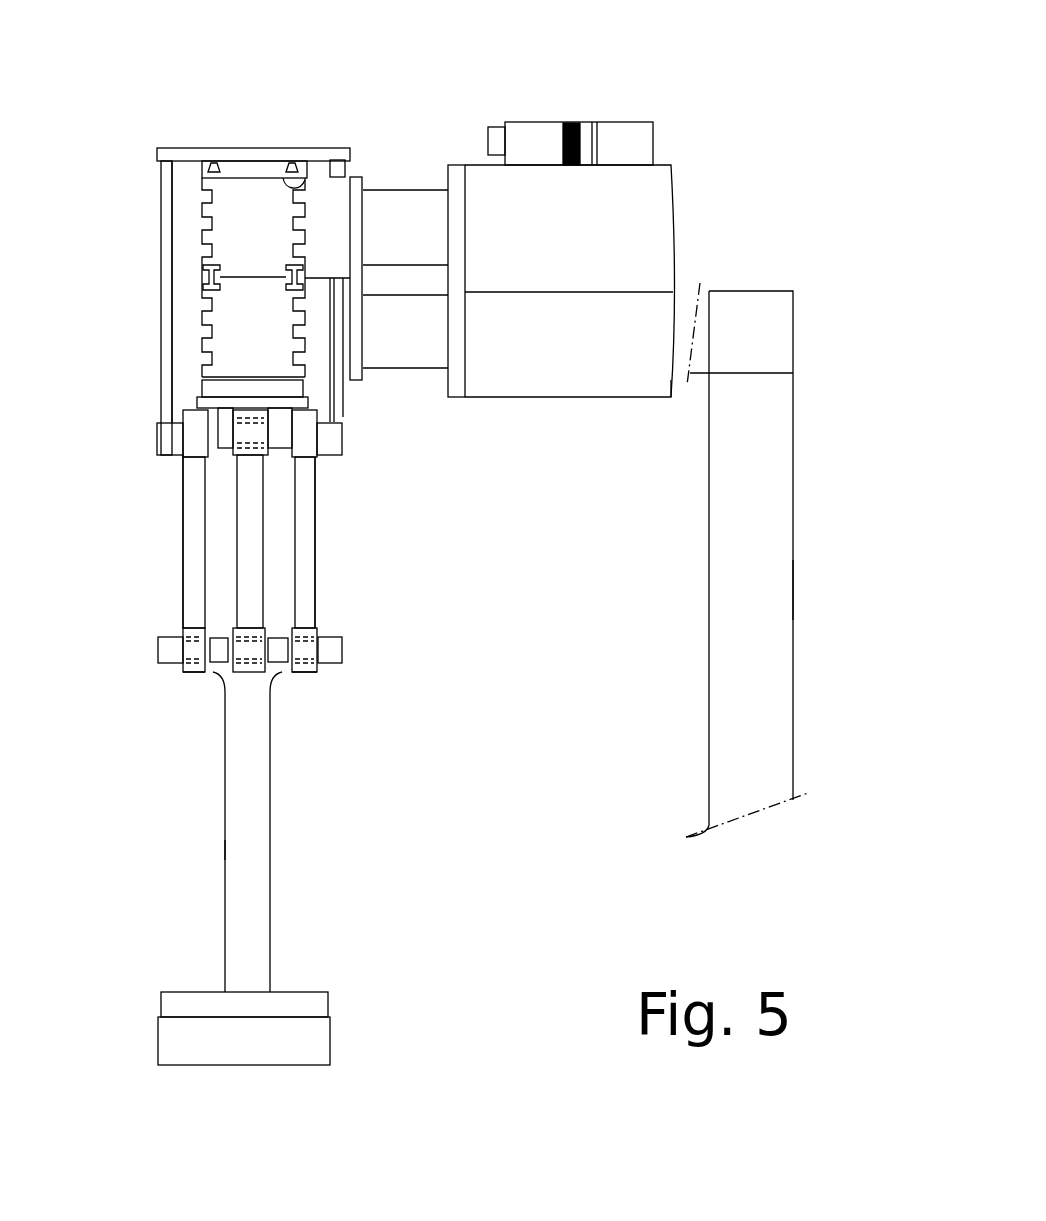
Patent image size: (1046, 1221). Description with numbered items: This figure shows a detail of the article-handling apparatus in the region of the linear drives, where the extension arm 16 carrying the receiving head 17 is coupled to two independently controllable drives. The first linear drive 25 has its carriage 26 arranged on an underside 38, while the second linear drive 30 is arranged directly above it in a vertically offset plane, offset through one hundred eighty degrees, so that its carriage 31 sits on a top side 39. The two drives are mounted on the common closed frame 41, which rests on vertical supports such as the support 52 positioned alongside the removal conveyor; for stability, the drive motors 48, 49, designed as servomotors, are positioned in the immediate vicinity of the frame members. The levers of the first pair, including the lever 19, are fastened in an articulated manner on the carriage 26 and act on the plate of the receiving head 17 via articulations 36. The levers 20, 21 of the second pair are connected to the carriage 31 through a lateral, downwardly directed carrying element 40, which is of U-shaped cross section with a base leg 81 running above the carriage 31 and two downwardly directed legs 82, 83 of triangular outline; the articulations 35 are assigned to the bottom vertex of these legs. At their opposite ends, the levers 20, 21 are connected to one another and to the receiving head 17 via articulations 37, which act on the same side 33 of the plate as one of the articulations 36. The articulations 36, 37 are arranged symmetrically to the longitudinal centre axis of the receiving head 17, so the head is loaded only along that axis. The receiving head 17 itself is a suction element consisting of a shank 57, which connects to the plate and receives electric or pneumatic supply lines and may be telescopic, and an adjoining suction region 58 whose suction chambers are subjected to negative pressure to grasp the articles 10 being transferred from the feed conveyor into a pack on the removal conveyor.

The article 10 is at (180, 1040).
The extension arm 16 is at (160, 598).
The receiving head 17 is at (316, 860).
The lever 19 is at (252, 575).
The lever 20 is at (195, 520).
The lever 21 is at (303, 522).
The linear drive 25 is at (198, 330).
The carriage 26 is at (222, 388).
The second linear drive 30 is at (195, 225).
The carriage 31 is at (243, 172).
The side of plate 33 is at (160, 650).
The articulation 35 is at (175, 428).
The articulation 36 is at (238, 676).
The articulation 37 is at (177, 668).
The underside 38 is at (258, 372).
The top side 39 is at (305, 175).
The carrying element 40 is at (153, 261).
The frame 41 is at (800, 328).
The drive motor 48 is at (650, 375).
The drive motor 49 is at (648, 195).
The support 52 is at (778, 592).
The shank 57 is at (230, 848).
The suction region 58 is at (190, 1003).
The base leg 81 is at (190, 160).
The leg 82 is at (333, 398).
The leg 83 is at (136, 163).